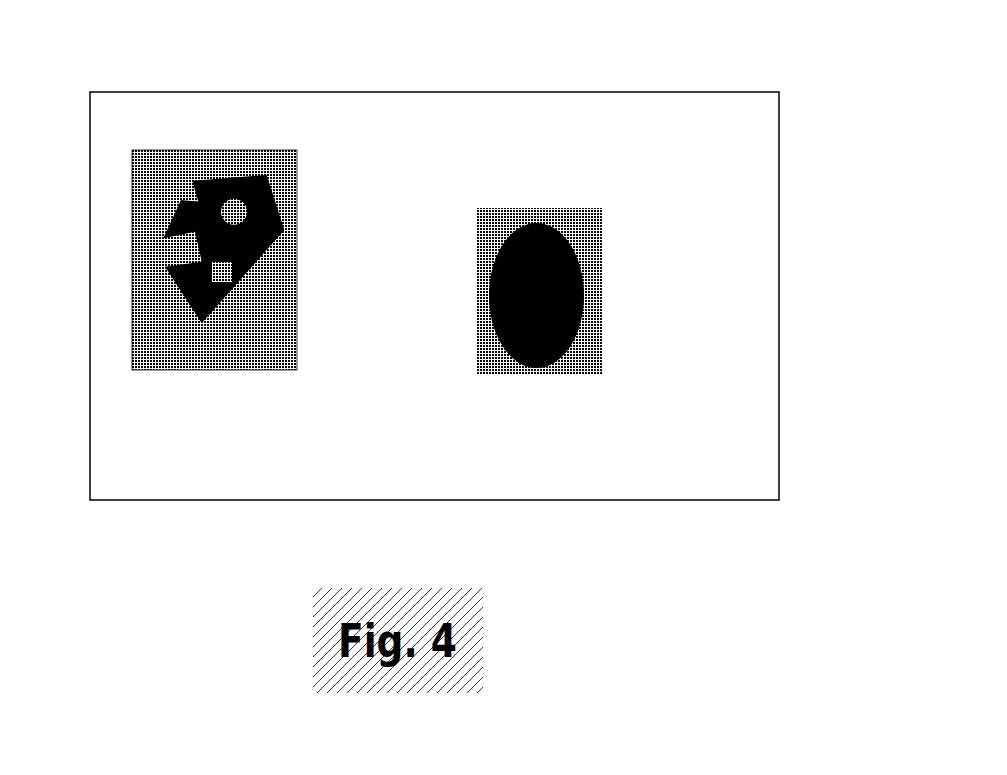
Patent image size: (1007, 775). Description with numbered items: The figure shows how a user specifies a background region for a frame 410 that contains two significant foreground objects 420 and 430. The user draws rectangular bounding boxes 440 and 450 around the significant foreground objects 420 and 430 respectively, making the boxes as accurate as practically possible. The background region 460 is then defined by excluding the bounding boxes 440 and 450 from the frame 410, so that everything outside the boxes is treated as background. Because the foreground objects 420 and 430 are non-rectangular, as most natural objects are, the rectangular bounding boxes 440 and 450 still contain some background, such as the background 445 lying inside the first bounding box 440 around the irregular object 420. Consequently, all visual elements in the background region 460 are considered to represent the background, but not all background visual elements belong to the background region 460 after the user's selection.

The frame 410 is at (200, 92).
The significant foreground object 420 is at (258, 178).
The significant foreground object 430 is at (567, 238).
The rectangular bounding box 440 is at (135, 295).
The background 445 is at (146, 174).
The rectangular bounding box 450 is at (602, 277).
The background region 460 is at (737, 467).